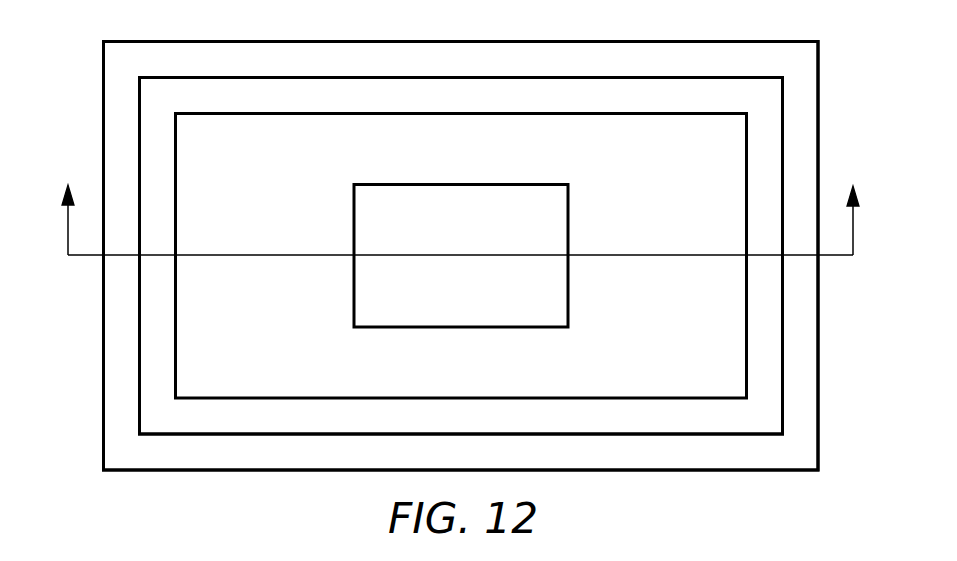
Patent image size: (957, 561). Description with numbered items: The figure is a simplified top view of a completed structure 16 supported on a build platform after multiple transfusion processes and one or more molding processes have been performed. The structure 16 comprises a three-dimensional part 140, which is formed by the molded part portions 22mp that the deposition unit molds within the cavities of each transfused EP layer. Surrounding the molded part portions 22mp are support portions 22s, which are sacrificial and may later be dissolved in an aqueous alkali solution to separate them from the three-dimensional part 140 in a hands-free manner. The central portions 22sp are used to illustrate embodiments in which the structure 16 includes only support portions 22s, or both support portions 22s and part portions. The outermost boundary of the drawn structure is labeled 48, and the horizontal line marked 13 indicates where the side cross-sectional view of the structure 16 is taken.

The structure 16 is at (745, 70).
The outer frame / housing 48 is at (808, 452).
The support portions 22s is at (152, 376).
The 3D part 140 is at (233, 104).
The molded part portions 22mp is at (196, 158).
The portions 22sp is at (448, 198).
The line 13- 13 is at (462, 220).